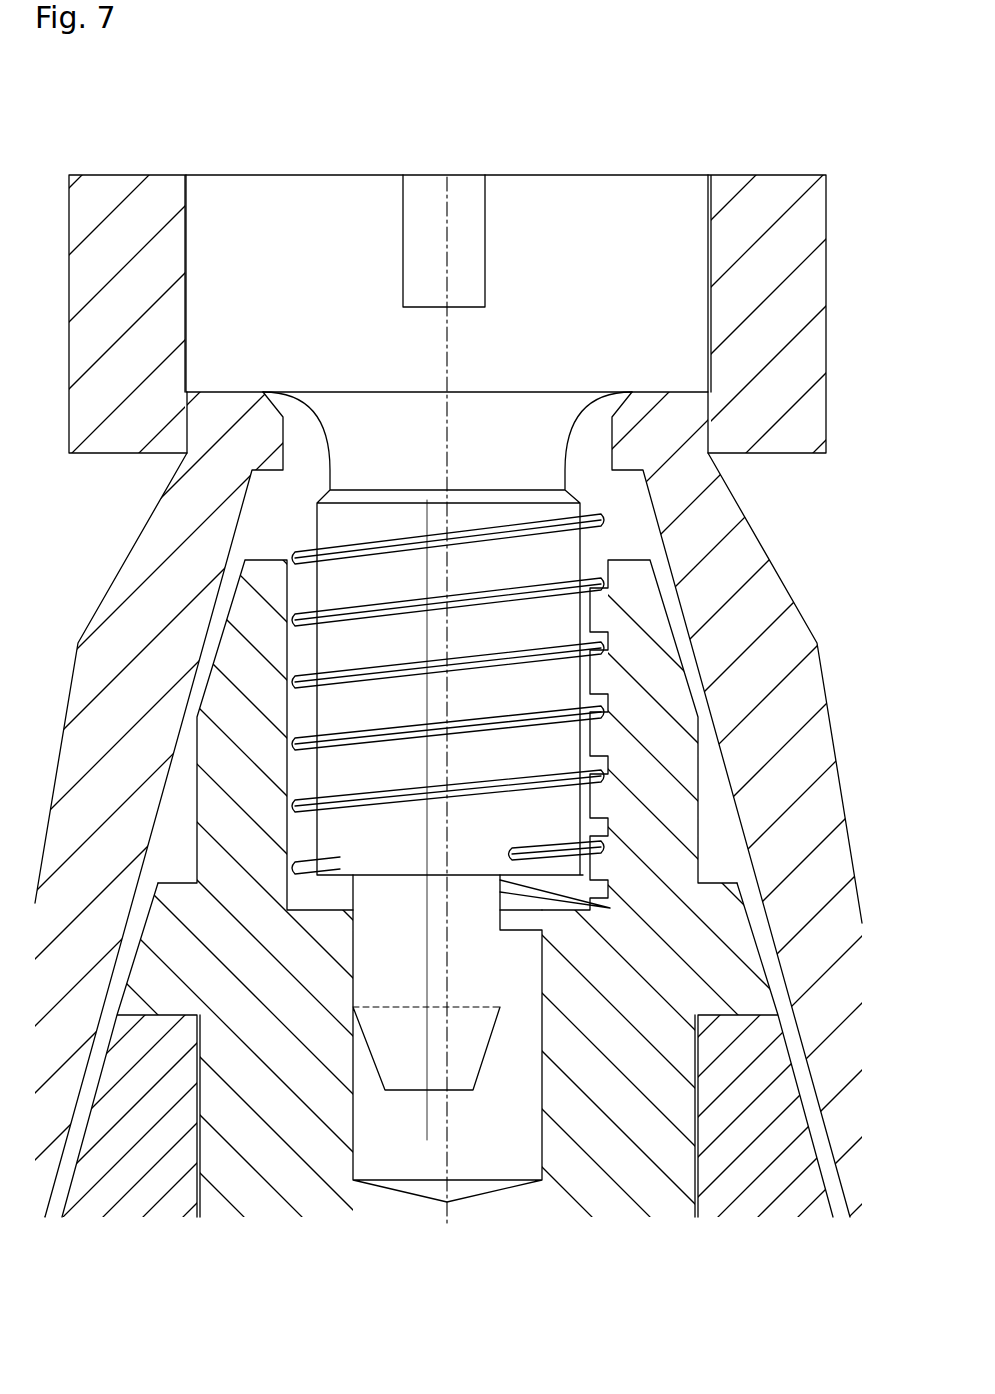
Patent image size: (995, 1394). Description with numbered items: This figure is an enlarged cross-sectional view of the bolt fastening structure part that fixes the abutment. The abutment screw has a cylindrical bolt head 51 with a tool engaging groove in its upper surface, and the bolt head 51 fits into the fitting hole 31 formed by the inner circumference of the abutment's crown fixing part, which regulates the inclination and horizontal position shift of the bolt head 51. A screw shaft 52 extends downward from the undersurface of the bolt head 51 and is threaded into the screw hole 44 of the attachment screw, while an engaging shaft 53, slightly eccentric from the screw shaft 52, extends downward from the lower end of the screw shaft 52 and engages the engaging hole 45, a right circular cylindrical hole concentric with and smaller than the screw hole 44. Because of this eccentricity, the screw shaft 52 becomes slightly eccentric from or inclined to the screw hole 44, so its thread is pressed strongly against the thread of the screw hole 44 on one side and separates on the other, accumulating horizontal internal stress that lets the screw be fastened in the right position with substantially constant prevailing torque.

The fitting hole 31 is at (700, 236).
The bolt head 51 is at (586, 175).
The screw shaft 52 is at (570, 548).
The screw hole 44 is at (590, 597).
The engaging hole 45 is at (542, 1103).
The engaging shaft 53 is at (395, 1047).